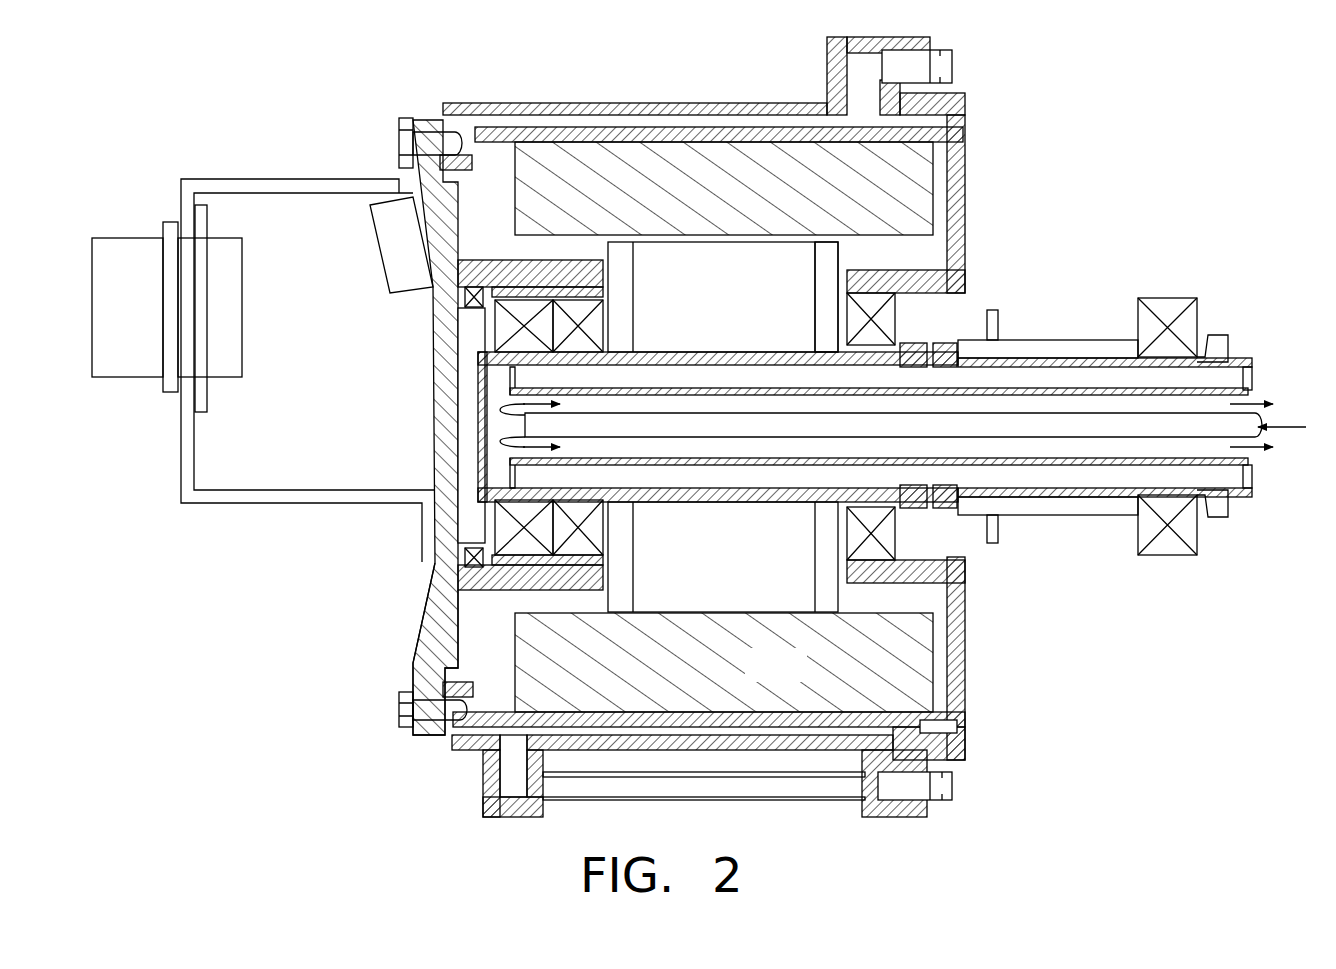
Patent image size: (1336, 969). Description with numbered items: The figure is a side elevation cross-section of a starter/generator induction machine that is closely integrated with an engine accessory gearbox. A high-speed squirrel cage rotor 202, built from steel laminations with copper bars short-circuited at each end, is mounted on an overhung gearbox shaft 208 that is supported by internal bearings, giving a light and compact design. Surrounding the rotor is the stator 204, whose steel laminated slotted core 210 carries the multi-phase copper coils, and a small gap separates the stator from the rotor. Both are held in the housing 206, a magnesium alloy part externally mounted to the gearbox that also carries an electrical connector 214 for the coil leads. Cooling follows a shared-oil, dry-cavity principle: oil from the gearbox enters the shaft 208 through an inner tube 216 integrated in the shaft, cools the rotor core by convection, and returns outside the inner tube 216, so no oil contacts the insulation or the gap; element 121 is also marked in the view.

The rotor end ring / magnet assembly 121 is at (852, 238).
The squirrel cage rotor 202 is at (745, 572).
The stator 204 is at (800, 677).
The housing 206 is at (445, 583).
The overhung gearbox shaft 208 is at (1092, 423).
The steel laminated slotted core 210 is at (463, 630).
The electrical connector 214 is at (377, 253).
The inner tube 216 is at (1210, 427).